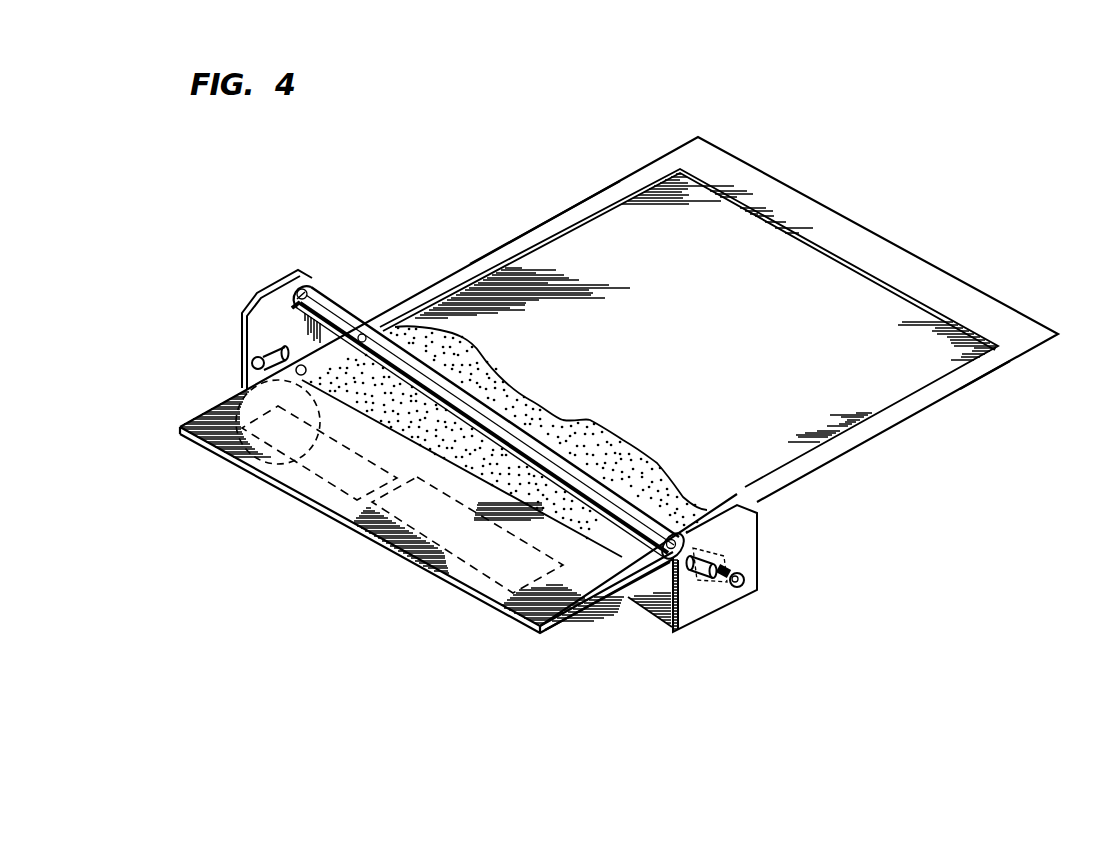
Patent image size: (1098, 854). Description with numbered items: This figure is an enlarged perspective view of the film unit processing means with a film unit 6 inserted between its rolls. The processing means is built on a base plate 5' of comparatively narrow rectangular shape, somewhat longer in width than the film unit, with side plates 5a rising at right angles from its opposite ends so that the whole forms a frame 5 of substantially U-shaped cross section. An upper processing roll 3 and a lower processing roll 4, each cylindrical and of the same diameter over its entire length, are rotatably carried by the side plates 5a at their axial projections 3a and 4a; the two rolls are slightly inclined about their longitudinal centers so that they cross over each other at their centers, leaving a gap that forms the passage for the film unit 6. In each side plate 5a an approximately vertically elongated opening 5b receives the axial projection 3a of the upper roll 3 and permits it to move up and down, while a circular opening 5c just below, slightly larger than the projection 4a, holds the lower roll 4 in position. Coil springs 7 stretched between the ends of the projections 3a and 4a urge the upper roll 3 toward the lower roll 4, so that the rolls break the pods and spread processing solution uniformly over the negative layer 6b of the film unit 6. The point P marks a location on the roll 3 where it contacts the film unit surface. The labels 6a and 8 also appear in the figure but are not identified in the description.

The upper processing roll 3 is at (535, 432).
The axial projection 3a is at (308, 290).
The lower processing roll 4 is at (262, 472).
The axial projection 4a is at (253, 366).
The frame 5 is at (641, 661).
The base plate 5' is at (606, 622).
The side plate 5a is at (265, 318).
The elongated opening 5b is at (300, 302).
The circular opening 5c is at (250, 357).
The film unit 6 is at (632, 165).
The frame edge portion 6a is at (572, 213).
The negative layer 6b is at (843, 283).
The coil spring 7 is at (728, 586).
The contact point P is at (362, 336).
The hidden recess 8 is at (245, 392).